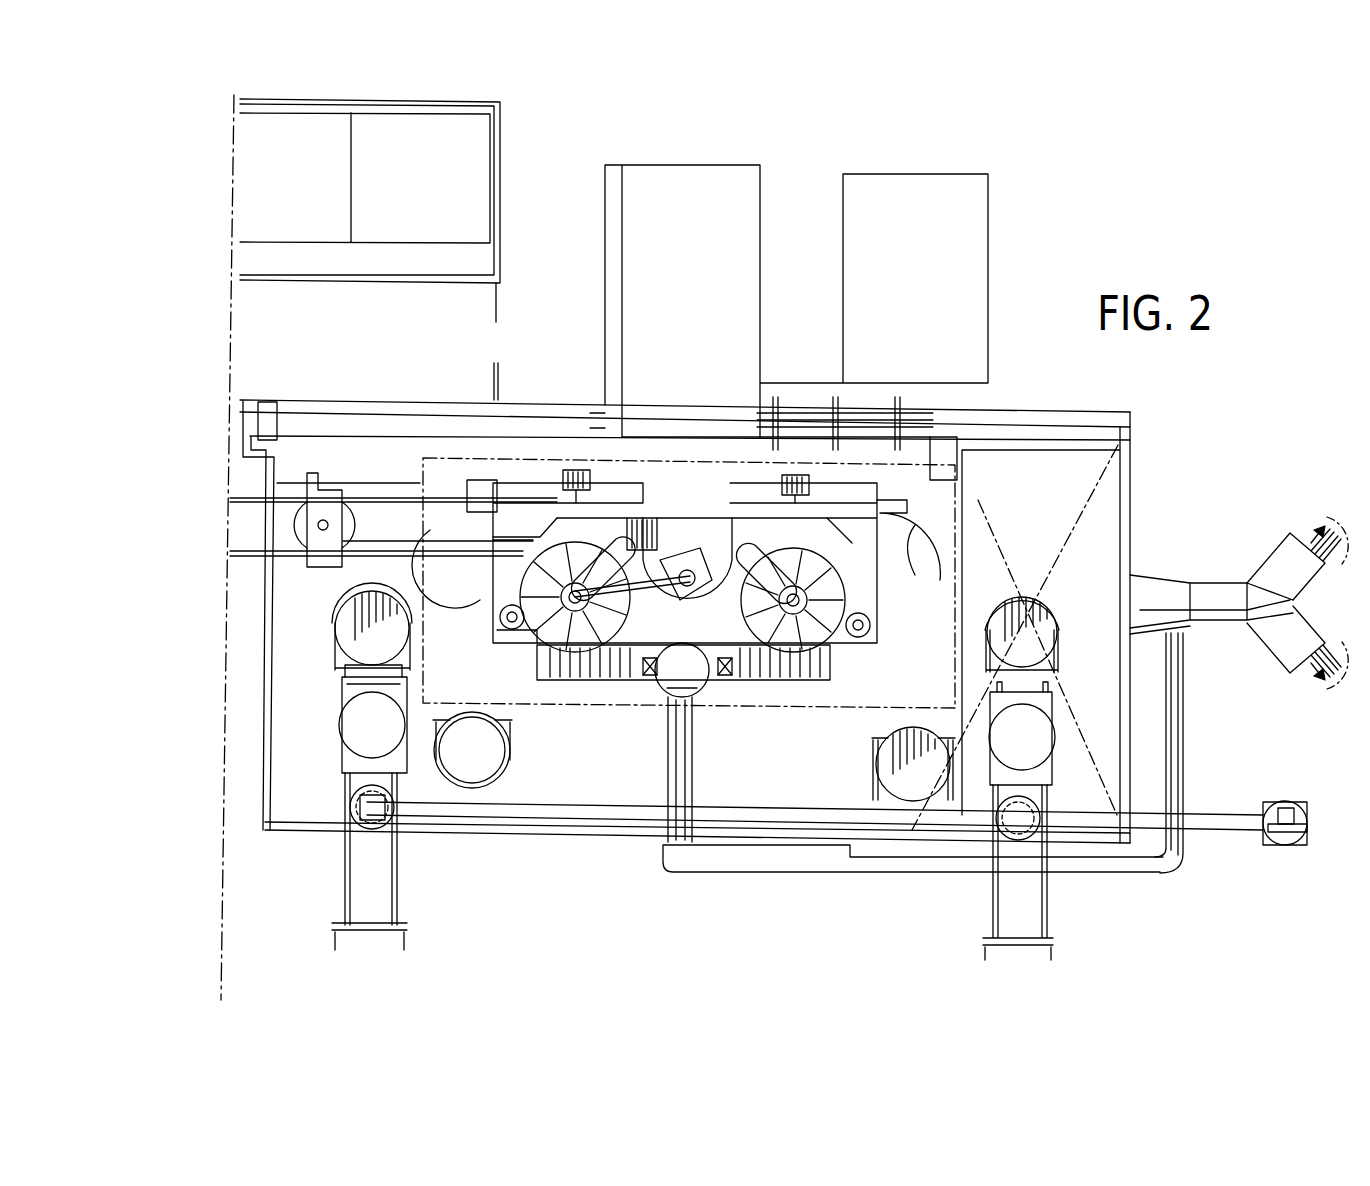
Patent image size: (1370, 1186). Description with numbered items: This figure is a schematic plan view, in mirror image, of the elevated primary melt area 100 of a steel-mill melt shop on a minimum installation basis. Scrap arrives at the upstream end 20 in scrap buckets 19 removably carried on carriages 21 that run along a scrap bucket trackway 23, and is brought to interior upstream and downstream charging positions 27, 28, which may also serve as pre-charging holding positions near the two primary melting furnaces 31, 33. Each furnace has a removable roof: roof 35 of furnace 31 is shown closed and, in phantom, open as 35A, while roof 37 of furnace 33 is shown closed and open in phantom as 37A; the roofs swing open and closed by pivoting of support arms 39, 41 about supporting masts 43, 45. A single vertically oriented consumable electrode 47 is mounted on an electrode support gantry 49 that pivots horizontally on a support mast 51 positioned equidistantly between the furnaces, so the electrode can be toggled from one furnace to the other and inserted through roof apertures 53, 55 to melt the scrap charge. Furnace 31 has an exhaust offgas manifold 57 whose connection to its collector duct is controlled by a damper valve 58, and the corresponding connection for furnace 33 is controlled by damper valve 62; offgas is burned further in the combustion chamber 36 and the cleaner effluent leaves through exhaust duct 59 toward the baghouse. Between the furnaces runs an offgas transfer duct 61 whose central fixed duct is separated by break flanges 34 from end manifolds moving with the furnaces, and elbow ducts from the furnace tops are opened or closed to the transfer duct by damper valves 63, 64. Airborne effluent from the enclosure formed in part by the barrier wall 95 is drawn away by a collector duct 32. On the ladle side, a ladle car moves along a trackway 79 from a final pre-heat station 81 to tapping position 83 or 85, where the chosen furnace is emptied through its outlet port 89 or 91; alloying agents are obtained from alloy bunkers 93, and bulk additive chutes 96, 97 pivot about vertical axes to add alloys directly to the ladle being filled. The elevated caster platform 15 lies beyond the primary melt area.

The elevated caster platform 15 is at (265, 804).
The scrap bucket 19 is at (453, 740).
The upstream end 20 is at (1132, 742).
The carriage 21 is at (347, 765).
The scrap bucket trackway 23 is at (348, 870).
The upstream charging position 27 is at (925, 708).
The downstream charging position 28 is at (415, 638).
The primary melting furnace 31 is at (580, 658).
The collector duct 32 is at (1180, 585).
The primary melting furnace 33 is at (825, 660).
The break flange 34 is at (612, 682).
The roof 35 is at (530, 500).
The roof in open position 35A is at (417, 467).
The combustion chamber 36 is at (682, 670).
The roof 37 is at (930, 545).
The roof in open position 37A is at (920, 520).
The support arm 39 is at (432, 582).
The support arm 41 is at (930, 580).
The supporting mast 43 is at (497, 632).
The supporting mast 45 is at (868, 657).
The consumable electrode 47 is at (447, 527).
The electrode support gantry 49 is at (658, 525).
The support mast 51 is at (684, 565).
The roof aperture 53 is at (535, 660).
The roof aperture 55 is at (800, 690).
The exhaust offgas manifold 57 is at (545, 682).
The damper valve 58 is at (630, 682).
The exhaust duct 59 is at (692, 790).
The offgas transfer duct 61 is at (693, 540).
The damper valve 62 is at (725, 682).
The damper valve 63 is at (600, 512).
The damper valve 64 is at (757, 555).
The trackway 79 is at (243, 490).
The final pre-heat station 81 is at (305, 568).
The tapping position 83 is at (560, 470).
The tapping position 85 is at (757, 473).
The outlet port 89 is at (530, 520).
The outlet port 91 is at (838, 500).
The alloy bunker 93 is at (842, 440).
The barrier wall 95 is at (268, 637).
The bulk additive chute 96 is at (575, 468).
The bulk additive chute 97 is at (790, 478).
The primary melt area 100 is at (517, 793).